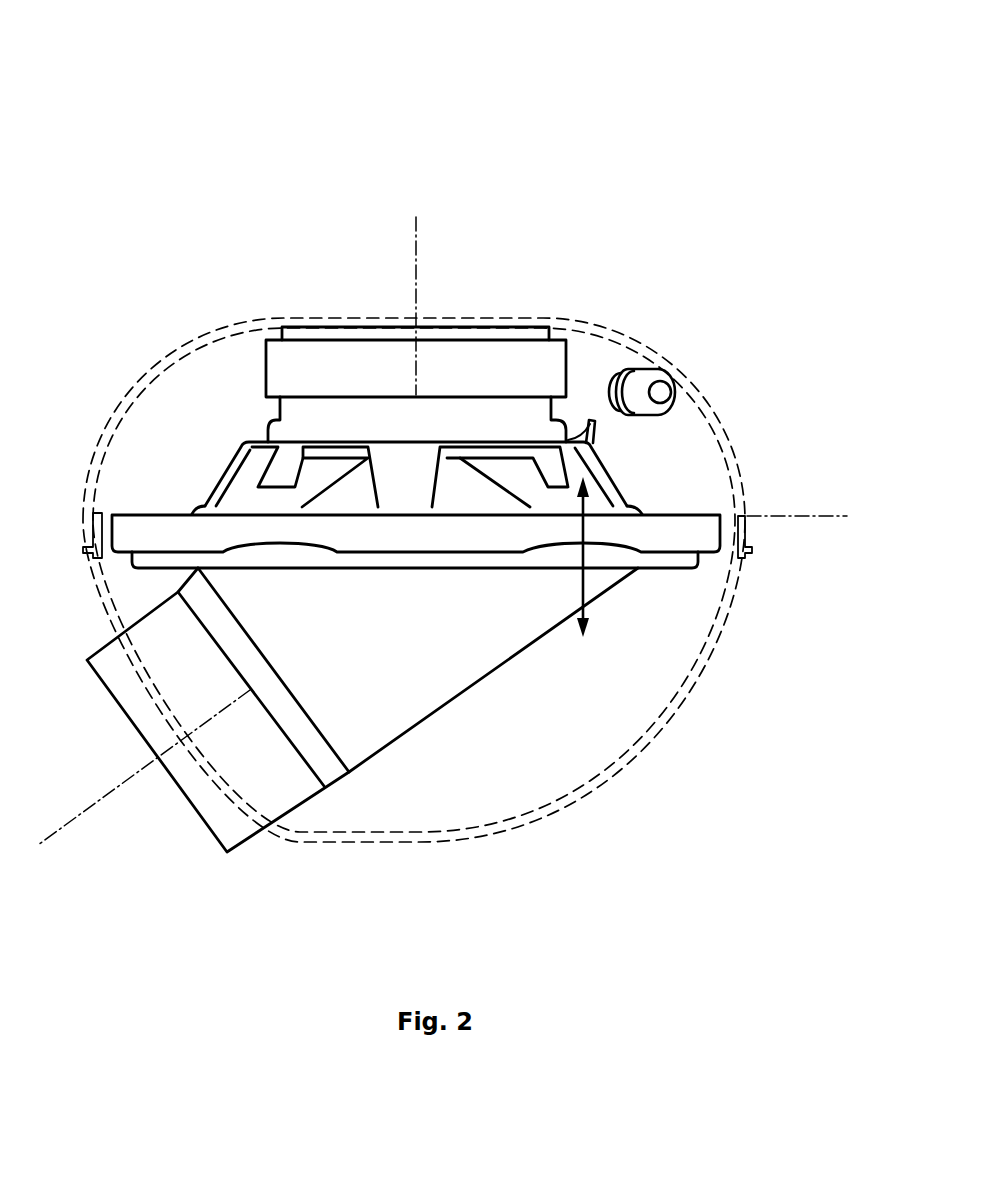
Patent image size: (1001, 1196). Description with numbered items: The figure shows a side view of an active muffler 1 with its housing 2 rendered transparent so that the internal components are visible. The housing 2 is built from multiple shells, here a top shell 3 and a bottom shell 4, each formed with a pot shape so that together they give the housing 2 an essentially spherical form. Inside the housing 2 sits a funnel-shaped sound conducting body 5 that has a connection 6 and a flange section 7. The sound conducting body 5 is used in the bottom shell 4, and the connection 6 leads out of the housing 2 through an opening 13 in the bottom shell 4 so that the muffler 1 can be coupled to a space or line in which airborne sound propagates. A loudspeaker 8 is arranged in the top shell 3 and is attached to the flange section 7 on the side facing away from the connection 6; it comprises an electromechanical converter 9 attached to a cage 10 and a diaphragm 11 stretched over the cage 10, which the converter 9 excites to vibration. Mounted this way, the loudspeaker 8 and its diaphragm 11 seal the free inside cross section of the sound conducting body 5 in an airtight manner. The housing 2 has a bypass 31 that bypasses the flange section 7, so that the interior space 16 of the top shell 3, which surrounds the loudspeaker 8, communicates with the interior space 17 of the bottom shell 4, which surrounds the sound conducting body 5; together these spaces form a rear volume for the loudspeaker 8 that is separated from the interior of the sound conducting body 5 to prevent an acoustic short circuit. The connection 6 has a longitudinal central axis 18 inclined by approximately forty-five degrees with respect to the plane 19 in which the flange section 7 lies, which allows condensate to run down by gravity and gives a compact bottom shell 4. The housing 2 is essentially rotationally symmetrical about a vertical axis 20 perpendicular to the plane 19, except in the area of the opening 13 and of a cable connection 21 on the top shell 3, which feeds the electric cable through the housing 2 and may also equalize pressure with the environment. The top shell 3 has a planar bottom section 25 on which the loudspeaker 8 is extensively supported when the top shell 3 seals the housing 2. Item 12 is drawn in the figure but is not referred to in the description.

The active muffler 1 is at (140, 213).
The housing 2 is at (738, 600).
The top shell 3 is at (653, 347).
The bottom shell 4 is at (700, 697).
The sound conducting body 5 is at (449, 725).
The connection 6 is at (203, 822).
The flange section 7 is at (692, 513).
The loudspeaker 8 is at (252, 369).
The electromechanical converter 9 is at (343, 372).
The cage 10 is at (230, 460).
The diaphragm 11 is at (457, 485).
The connection terminal 12 is at (590, 418).
The opening 13 is at (133, 670).
The interior space of the top shell 16 is at (128, 480).
The interior space of the bottom shell 17 is at (582, 730).
The longitudinal central axis 18 is at (80, 825).
The plane 19 is at (800, 513).
The vertical axis 20 is at (418, 250).
The cable connection 21 is at (660, 378).
The planar bottom section 25 is at (287, 317).
The bypass 31 is at (585, 575).